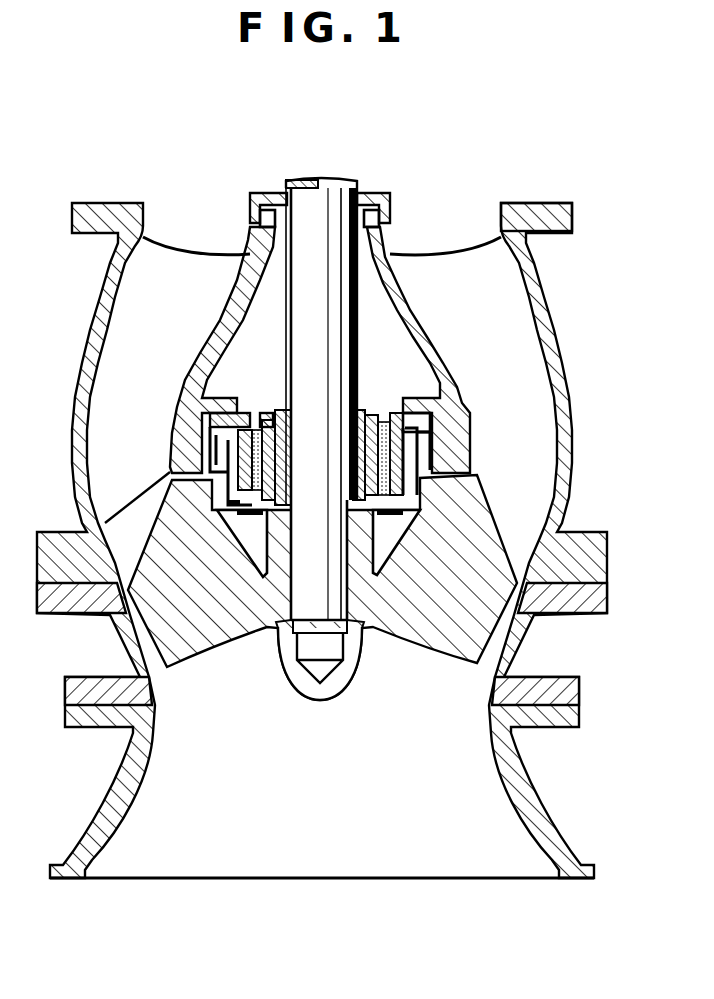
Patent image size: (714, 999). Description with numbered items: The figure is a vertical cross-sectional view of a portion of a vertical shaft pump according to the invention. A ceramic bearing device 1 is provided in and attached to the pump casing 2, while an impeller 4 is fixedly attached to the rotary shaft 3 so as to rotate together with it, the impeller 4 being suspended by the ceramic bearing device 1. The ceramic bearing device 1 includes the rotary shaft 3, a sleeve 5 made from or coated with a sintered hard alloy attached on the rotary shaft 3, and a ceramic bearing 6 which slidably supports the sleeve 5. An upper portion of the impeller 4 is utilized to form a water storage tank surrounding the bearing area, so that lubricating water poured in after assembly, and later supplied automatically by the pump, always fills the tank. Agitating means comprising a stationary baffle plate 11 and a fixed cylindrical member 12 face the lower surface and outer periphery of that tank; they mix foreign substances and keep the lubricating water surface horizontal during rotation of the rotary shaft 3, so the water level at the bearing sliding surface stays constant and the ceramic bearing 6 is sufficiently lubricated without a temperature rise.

The ceramic bearing device 1 is at (462, 392).
The pump casing 2 is at (573, 216).
The rotary shaft 3 is at (328, 180).
The impeller 4 is at (482, 500).
The sleeve 5 is at (363, 405).
The ceramic bearing 6 is at (380, 405).
The stationary baffle plate 11 is at (390, 518).
The fixed cylindrical member 12 is at (430, 450).